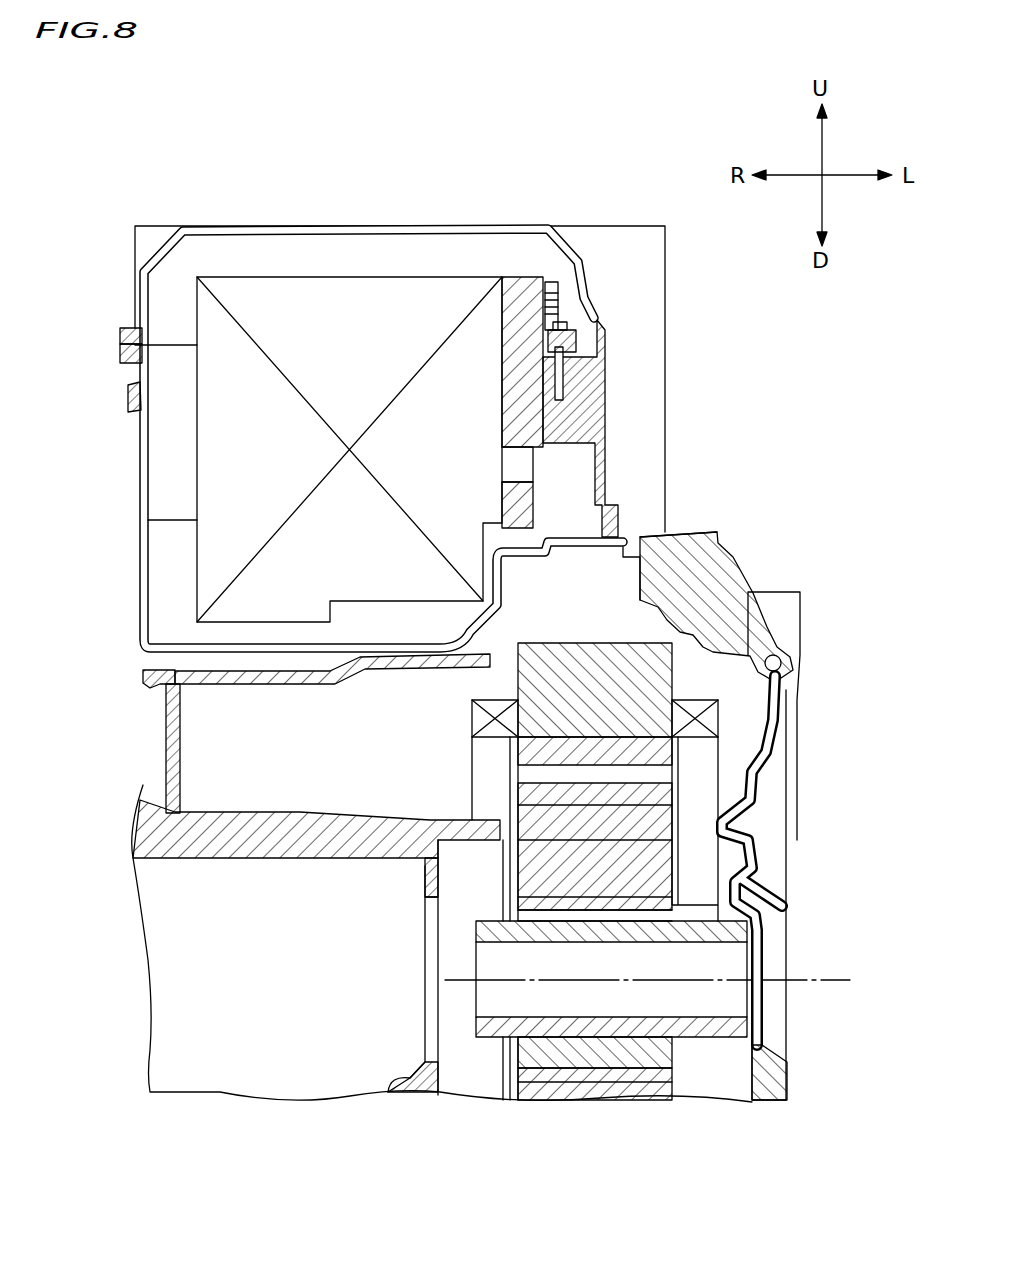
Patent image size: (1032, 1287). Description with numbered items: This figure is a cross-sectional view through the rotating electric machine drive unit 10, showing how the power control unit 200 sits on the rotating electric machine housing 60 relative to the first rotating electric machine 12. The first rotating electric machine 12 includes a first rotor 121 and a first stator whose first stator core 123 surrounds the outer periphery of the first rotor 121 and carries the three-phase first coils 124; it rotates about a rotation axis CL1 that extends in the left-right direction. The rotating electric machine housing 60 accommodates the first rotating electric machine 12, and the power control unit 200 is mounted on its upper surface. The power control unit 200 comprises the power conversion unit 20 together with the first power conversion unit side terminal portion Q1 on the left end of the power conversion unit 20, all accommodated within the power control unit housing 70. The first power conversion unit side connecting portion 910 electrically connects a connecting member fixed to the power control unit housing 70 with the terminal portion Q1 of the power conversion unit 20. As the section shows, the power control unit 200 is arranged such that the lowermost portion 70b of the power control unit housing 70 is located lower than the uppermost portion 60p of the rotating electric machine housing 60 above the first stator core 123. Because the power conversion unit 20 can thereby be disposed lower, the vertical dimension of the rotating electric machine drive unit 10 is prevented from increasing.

The rotating electric machine drive unit 10 is at (124, 141).
The power control unit 200 is at (112, 226).
The power control unit housing 70 is at (150, 246).
The lowermost portion 70b is at (320, 655).
The power conversion unit 20 is at (262, 320).
The first power conversion unit side connecting portion 910 is at (556, 345).
The first power conversion unit side terminal portion Q1 is at (560, 308).
The rotating electric machine housing 60 is at (722, 575).
The uppermost portion 60p is at (690, 533).
The first stator core 123 is at (650, 685).
The first coils 124 is at (700, 720).
The first rotor 121 is at (760, 800).
The first rotating electric machine 12 is at (722, 979).
The rotation axis CL1 is at (815, 988).